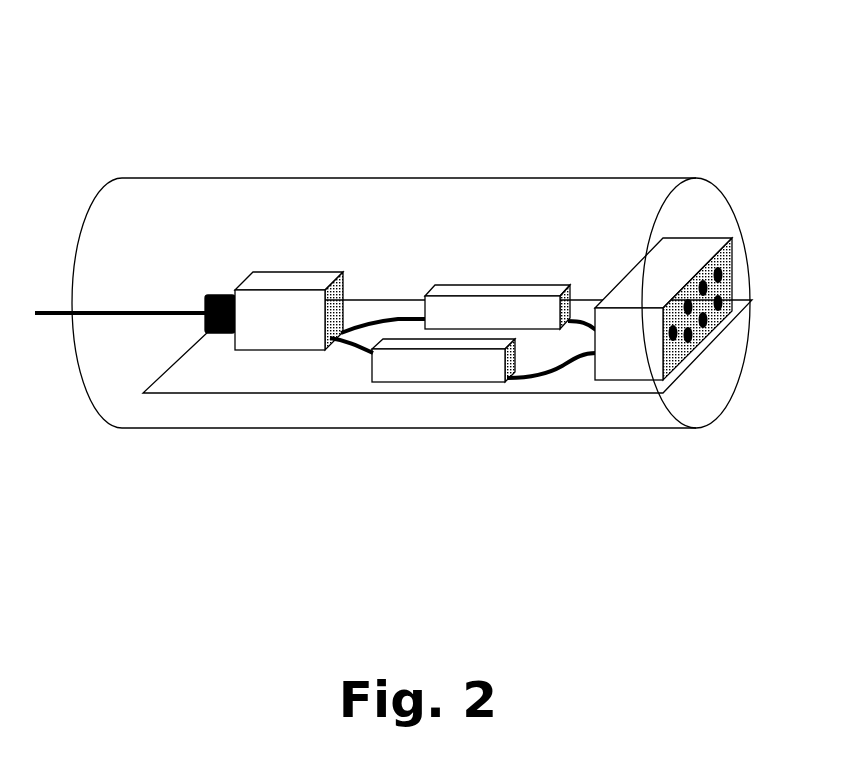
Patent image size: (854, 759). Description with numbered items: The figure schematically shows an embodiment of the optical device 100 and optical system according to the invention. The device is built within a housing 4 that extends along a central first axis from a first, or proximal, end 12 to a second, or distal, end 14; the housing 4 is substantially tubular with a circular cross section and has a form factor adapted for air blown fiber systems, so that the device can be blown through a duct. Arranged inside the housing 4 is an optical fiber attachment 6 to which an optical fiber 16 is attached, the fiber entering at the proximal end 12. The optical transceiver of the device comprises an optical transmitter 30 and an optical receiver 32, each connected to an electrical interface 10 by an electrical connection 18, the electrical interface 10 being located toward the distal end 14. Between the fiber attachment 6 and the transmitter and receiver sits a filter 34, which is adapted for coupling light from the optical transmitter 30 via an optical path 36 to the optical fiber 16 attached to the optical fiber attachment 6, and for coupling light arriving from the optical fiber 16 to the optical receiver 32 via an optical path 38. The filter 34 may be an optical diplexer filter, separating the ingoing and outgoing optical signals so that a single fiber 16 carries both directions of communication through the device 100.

The optical device 100 is at (215, 137).
The housing 4 is at (420, 181).
The first end 12 is at (75, 215).
The optical fiber 16 is at (53, 313).
The optical fiber attachment 6 is at (210, 340).
The filter 34 is at (293, 278).
The optical path 36 is at (383, 300).
The optical path 38 is at (335, 340).
The optical transmitter 30 is at (530, 288).
The optical receiver 32 is at (385, 372).
The electrical connection 18 is at (597, 320).
The electrical interface 10 is at (718, 242).
The second end 14 is at (727, 355).